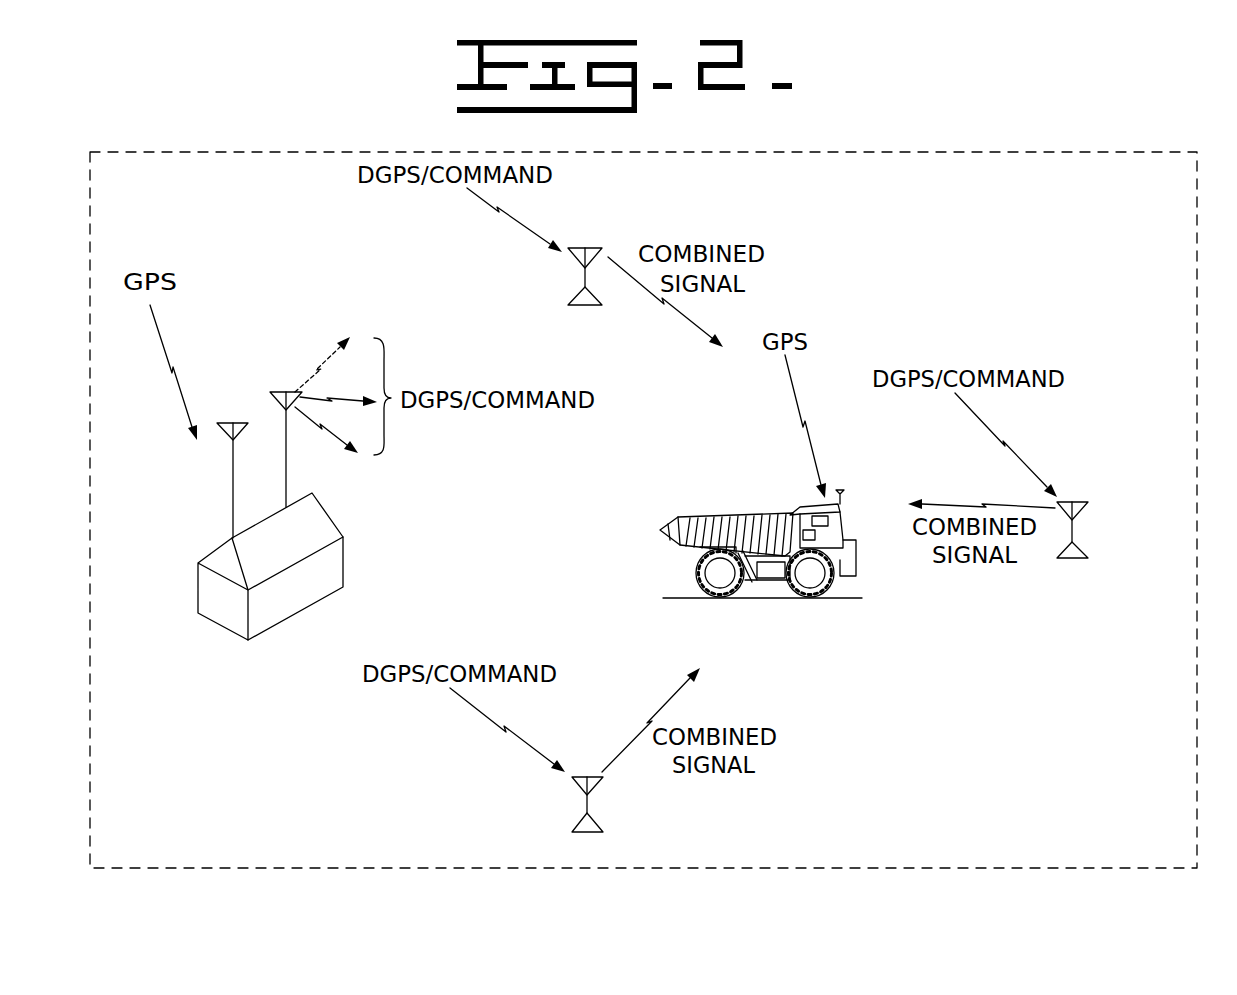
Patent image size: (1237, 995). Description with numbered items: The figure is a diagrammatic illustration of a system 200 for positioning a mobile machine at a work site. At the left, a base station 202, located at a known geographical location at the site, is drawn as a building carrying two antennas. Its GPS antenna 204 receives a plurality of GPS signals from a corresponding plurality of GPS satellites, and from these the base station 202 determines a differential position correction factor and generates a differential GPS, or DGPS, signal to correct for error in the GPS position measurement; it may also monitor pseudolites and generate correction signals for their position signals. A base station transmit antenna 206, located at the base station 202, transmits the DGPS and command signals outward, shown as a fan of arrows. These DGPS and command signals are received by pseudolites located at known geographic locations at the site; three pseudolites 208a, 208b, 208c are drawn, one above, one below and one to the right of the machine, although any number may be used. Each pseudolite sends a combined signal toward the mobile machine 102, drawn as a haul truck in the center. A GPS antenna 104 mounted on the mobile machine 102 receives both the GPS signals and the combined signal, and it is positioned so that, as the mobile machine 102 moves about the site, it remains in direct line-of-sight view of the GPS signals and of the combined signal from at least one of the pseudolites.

The system 200 is at (192, 152).
The base station 202 is at (312, 605).
The GPS antenna 204 is at (224, 487).
The base station transmit antenna 206 is at (283, 430).
The pseudolite 208a is at (575, 293).
The pseudolite 208b is at (577, 820).
The pseudolite 208c is at (1080, 545).
The mobile machine 102 is at (673, 545).
The GPS antenna 104 is at (840, 502).